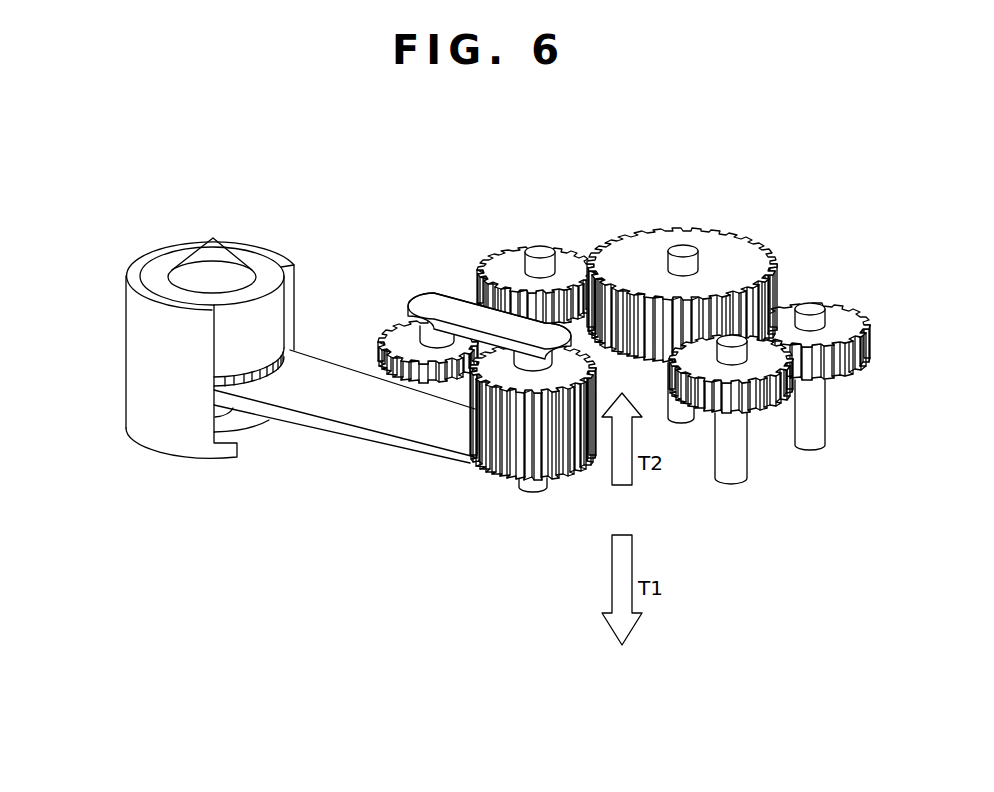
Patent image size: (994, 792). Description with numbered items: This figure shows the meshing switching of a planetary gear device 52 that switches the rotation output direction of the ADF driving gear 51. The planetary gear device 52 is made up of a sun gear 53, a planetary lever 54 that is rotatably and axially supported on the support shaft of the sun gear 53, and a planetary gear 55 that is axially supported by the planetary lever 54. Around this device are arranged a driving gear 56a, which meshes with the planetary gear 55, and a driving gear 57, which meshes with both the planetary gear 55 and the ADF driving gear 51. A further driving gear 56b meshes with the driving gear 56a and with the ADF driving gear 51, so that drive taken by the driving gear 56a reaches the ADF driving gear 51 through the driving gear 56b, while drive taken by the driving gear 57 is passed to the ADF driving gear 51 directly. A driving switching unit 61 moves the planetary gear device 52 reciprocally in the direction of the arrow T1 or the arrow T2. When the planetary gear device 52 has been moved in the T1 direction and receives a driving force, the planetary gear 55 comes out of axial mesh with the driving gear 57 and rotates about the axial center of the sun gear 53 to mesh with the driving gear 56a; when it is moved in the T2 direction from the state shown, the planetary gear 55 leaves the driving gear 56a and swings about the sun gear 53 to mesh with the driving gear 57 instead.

The ADF driving gear 51 is at (733, 253).
The planetary gear device 52 is at (357, 617).
The sun gear 53 is at (533, 377).
The planetary lever 54 is at (475, 315).
The planetary gear 55 is at (413, 333).
The driving gear 56a is at (705, 358).
The driving gear 56b is at (839, 301).
The driving gear 57 is at (565, 251).
The driving switching unit 61 is at (110, 223).